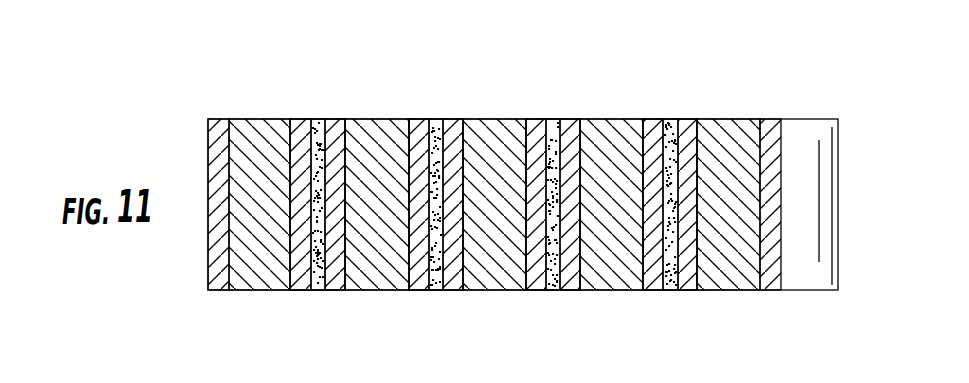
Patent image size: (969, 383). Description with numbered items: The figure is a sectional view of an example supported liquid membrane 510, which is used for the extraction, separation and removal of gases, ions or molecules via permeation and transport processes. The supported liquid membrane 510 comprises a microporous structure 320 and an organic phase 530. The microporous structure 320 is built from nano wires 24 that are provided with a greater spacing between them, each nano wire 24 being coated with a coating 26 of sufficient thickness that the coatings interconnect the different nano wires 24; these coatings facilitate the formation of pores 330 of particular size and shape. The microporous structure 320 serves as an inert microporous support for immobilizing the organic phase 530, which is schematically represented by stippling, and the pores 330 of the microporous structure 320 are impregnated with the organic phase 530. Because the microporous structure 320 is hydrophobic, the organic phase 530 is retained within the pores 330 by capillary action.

The supported liquid membrane 510 is at (136, 42).
The microporous structure 320 is at (205, 122).
The nano wires 24 is at (262, 128).
The coating 26 is at (215, 119).
The pores 330 is at (316, 124).
The organic phase 530 is at (320, 283).